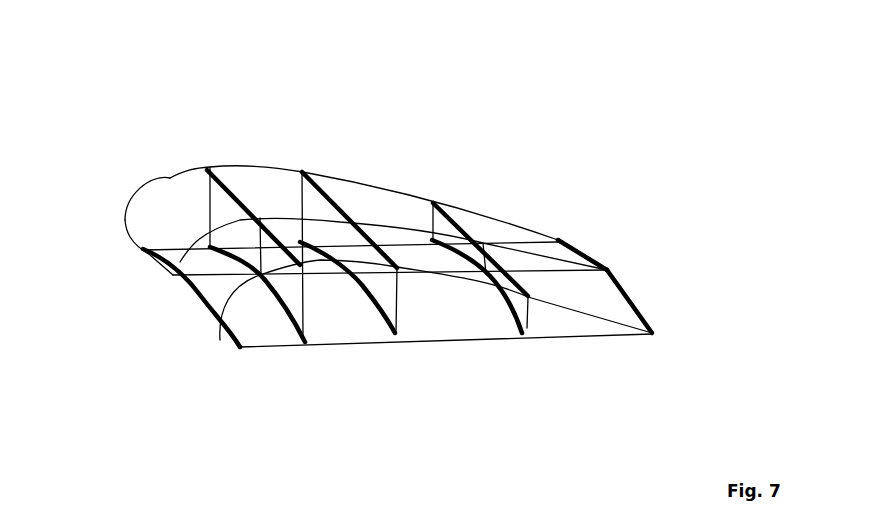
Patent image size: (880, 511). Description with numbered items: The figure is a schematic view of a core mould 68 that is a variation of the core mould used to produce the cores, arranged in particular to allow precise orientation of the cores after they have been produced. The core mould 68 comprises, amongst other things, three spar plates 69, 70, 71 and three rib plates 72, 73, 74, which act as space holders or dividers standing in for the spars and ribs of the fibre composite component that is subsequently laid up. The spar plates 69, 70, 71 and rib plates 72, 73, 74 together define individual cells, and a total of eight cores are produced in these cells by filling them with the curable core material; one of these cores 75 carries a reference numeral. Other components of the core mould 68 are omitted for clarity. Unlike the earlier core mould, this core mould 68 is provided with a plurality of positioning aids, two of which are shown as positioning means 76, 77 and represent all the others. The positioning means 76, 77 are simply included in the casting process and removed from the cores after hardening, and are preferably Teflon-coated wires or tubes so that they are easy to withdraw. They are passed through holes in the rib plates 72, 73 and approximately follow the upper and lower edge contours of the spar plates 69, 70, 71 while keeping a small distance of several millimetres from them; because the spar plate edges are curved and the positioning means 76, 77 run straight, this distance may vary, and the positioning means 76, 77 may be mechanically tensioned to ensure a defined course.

The core mould 68 is at (376, 94).
The spar plate 69 is at (308, 336).
The spar plate 70 is at (398, 328).
The spar plate 71 is at (530, 318).
The rib plate 72 is at (220, 340).
The rib plate 73 is at (180, 262).
The rib plate 74 is at (126, 220).
The core 75 is at (265, 184).
The positioning means 76 is at (214, 172).
The positioning means 77 is at (207, 168).